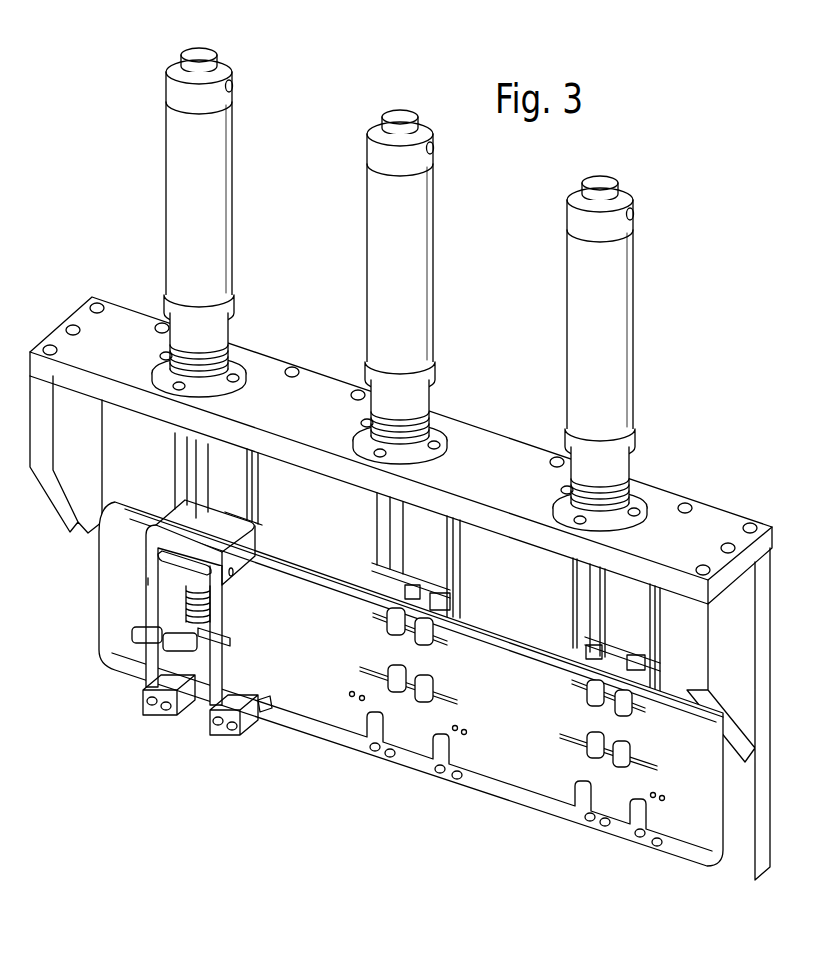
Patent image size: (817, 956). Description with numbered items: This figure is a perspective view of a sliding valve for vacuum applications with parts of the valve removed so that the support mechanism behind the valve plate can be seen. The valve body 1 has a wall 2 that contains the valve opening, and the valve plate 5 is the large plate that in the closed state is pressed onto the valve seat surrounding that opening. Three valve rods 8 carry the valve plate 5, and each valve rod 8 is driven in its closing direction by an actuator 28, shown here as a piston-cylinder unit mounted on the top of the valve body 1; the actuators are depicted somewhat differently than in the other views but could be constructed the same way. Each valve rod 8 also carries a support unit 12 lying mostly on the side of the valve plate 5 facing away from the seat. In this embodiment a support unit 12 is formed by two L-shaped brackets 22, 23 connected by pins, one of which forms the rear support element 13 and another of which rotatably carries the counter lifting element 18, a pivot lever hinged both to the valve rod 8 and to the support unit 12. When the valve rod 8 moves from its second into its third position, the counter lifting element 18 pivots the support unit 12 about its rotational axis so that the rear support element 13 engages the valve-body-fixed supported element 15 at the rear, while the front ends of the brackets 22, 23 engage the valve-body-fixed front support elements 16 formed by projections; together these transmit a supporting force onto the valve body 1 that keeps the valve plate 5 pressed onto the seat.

The valve body 1 is at (743, 492).
The wall 2 is at (740, 833).
The valve plate 5 is at (500, 765).
The valve rod 8 is at (180, 484).
The support unit 12 is at (130, 583).
The rear support element 13 is at (222, 556).
The valve-body-fixed supported element 15 is at (208, 530).
The valve-body-fixed front support element 16 is at (175, 714).
The counter lifting element 18 is at (150, 640).
The L-shaped bracket 22 is at (265, 706).
The L-shaped bracket 23 is at (186, 612).
The actuator 28 is at (243, 137).